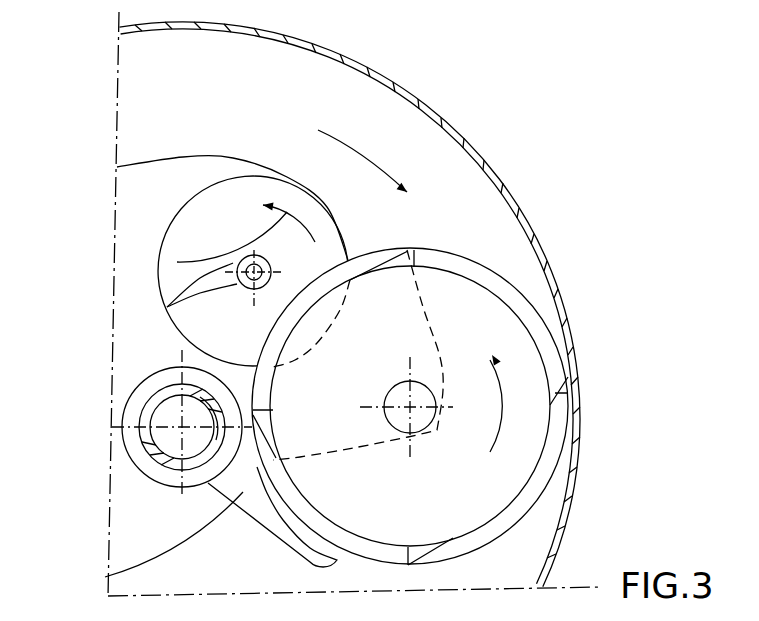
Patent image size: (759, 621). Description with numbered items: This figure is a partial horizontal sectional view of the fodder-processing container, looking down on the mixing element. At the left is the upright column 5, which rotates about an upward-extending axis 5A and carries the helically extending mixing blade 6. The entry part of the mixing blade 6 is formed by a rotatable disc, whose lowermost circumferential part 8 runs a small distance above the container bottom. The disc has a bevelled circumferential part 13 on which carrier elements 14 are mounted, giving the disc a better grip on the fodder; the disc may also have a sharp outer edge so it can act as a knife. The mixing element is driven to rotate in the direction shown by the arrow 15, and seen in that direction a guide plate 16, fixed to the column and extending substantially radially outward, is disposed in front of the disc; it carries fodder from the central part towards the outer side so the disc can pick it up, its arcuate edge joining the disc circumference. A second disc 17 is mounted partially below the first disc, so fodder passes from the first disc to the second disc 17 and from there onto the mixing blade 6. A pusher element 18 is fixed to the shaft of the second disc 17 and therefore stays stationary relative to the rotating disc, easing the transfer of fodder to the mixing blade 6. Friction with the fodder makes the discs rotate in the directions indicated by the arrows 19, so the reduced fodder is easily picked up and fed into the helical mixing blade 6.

The helical mixing blade 6 is at (158, 180).
The arrow indicating direction of rotation 15 is at (367, 158).
The second disc 17 is at (208, 221).
The arrows indicating disc rotation 19 is at (177, 262).
The pusher element 18 is at (197, 284).
The upright column 5 is at (138, 458).
The axis of rotation of the column 5A is at (148, 413).
The guide plate 16 is at (112, 576).
The lowermost part of the disc circumference 8 is at (527, 513).
The bevelled circumferential part 13 is at (513, 297).
The carrier elements 14 is at (552, 395).